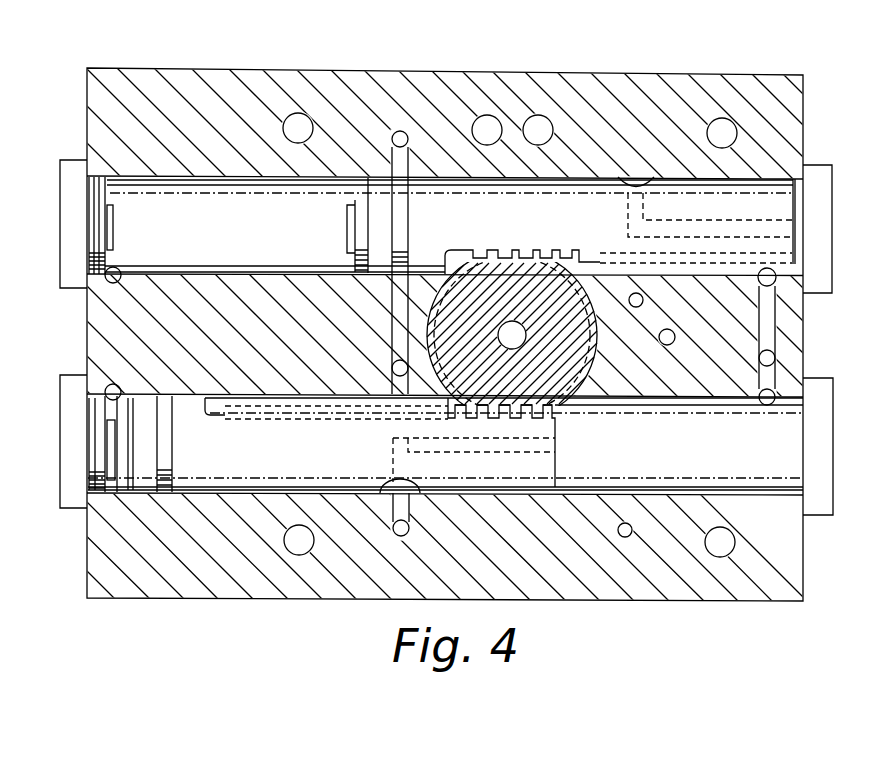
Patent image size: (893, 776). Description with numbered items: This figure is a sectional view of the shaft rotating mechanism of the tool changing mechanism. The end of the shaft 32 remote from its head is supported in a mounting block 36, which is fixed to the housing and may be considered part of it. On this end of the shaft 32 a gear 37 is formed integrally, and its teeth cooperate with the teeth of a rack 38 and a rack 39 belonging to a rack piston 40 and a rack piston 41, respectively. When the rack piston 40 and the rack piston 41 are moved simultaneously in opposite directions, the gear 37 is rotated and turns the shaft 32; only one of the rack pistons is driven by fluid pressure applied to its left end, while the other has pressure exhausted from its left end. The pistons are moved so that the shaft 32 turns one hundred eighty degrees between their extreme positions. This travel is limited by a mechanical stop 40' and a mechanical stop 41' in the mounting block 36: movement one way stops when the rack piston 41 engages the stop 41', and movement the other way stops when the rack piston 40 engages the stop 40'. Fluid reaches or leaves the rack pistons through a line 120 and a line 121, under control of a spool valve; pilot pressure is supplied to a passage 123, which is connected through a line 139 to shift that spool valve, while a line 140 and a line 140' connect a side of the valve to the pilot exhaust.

The mounting block 36 is at (772, 73).
The shaft 32 is at (506, 265).
The gear 37 is at (476, 407).
The rack 38 is at (560, 414).
The rack 39 is at (458, 250).
The rack piston 40 is at (445, 444).
The mechanical stop 40' is at (146, 444).
The rack piston 41 is at (450, 225).
The mechanical stop 41' is at (130, 225).
The line 120 is at (105, 392).
The line 121 is at (105, 276).
The passage 123 is at (392, 368).
The line 139 is at (395, 534).
The line 140 is at (412, 244).
The line 140' is at (807, 336).